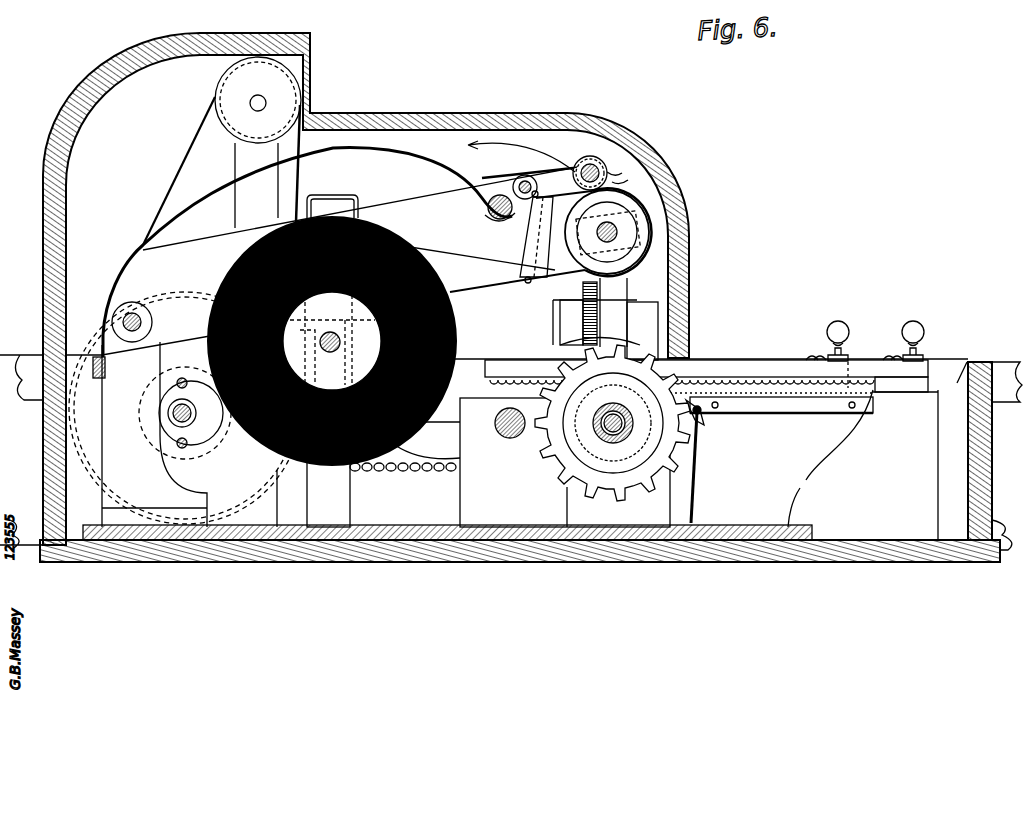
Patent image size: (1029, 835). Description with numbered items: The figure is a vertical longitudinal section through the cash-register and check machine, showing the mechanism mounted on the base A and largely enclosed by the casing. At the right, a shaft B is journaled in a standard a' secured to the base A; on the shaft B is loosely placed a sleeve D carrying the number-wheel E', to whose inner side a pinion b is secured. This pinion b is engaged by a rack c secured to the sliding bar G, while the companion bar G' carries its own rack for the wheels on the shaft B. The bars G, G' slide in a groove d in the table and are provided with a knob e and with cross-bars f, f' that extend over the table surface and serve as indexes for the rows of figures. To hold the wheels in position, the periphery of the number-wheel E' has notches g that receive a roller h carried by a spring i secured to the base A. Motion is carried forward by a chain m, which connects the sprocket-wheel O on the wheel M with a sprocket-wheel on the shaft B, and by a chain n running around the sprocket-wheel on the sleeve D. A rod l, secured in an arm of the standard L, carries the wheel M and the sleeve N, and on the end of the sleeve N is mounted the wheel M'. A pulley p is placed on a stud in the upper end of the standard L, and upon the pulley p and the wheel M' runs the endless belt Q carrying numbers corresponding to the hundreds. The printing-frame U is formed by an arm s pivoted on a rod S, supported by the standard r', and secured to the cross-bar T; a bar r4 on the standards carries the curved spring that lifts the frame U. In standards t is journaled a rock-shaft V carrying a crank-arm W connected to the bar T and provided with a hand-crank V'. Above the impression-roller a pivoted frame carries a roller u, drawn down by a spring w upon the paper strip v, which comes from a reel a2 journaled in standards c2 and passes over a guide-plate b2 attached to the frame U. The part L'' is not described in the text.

The base A is at (511, 297).
The bar G is at (711, 375).
The bar G' is at (682, 377).
The roller h is at (706, 408).
The spring i is at (698, 464).
The notch g is at (697, 430).
The groove d is at (838, 354).
The knob e is at (913, 341).
The cross-bar f' is at (812, 350).
The cross-bar f is at (889, 349).
The roller u is at (583, 158).
The spring w is at (617, 178).
The sleeve D is at (550, 240).
The number-wheel E' is at (531, 187).
The cross-bar T is at (500, 220).
The paper strip v is at (519, 193).
The printing-frame U is at (360, 218).
The guide-plate b2 is at (560, 275).
The rack c is at (561, 351).
The pulley p is at (258, 142).
The sprocket-wheel O is at (258, 103).
The endless belt Q is at (186, 159).
The standard L is at (300, 206).
The hand-crank V' is at (307, 252).
The arm s is at (185, 400).
The wheel M' is at (171, 431).
The standard c2 is at (328, 494).
The rod S is at (136, 343).
The bar r4 is at (99, 380).
The sleeve N is at (185, 413).
The rod l is at (190, 414).
The standard r' is at (127, 421).
The reel a2 is at (332, 341).
The standard t is at (565, 462).
The rock-shaft V is at (506, 432).
The crank-arm W is at (427, 440).
The chain m is at (403, 479).
The standard a' is at (578, 507).
The shaft B is at (612, 429).
The ratchet ring L'' is at (589, 436).
The pinion b is at (618, 423).
The chain n is at (612, 432).